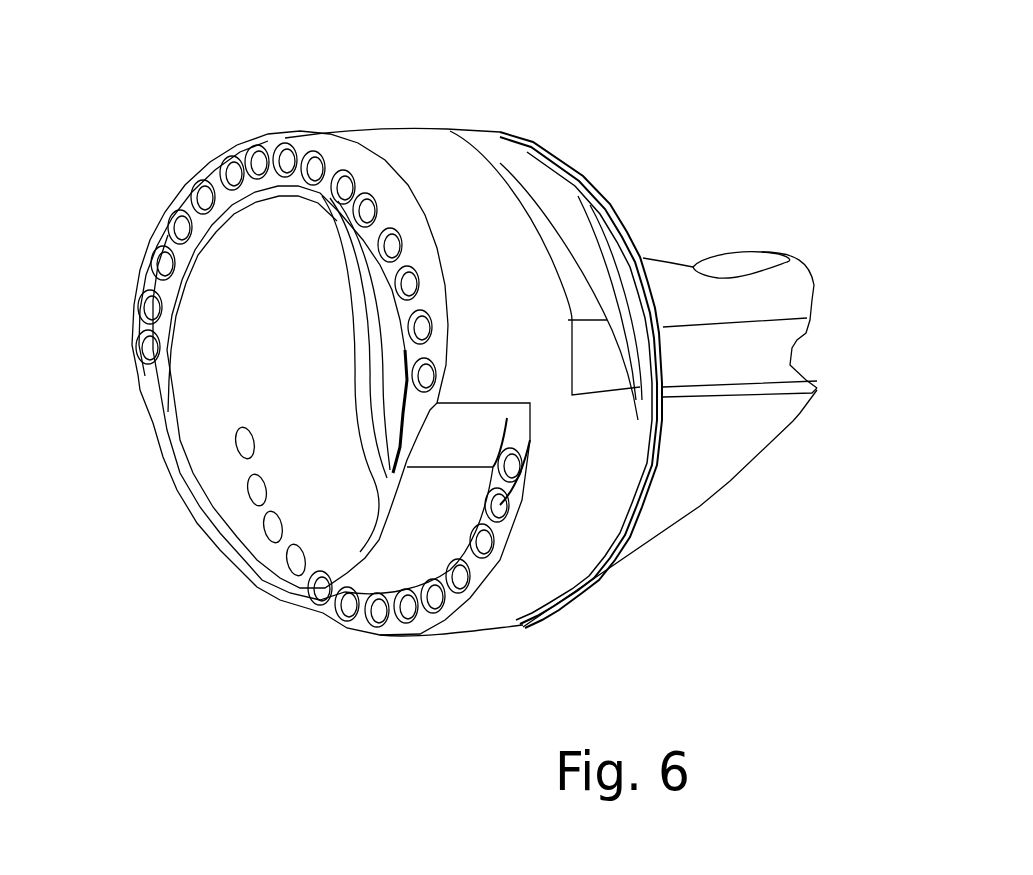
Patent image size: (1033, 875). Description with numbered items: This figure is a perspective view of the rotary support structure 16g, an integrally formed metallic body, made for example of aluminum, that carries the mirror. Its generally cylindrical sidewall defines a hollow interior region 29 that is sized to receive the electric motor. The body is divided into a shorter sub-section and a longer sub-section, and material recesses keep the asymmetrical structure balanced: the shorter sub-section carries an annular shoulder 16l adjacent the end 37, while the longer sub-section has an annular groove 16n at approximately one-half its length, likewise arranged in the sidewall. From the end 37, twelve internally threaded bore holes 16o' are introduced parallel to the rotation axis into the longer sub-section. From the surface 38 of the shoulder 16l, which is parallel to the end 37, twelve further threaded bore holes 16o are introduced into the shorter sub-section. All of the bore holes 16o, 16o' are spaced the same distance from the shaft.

The rotary support structure 16g is at (403, 157).
The annular groove 16n is at (573, 277).
The bore holes 16o is at (394, 586).
The bore holes 16o' is at (265, 260).
The annular shoulder 16l is at (456, 500).
The end 37 is at (145, 385).
The surface of shoulder 38 is at (518, 430).
The hollow interior region 29 is at (331, 450).